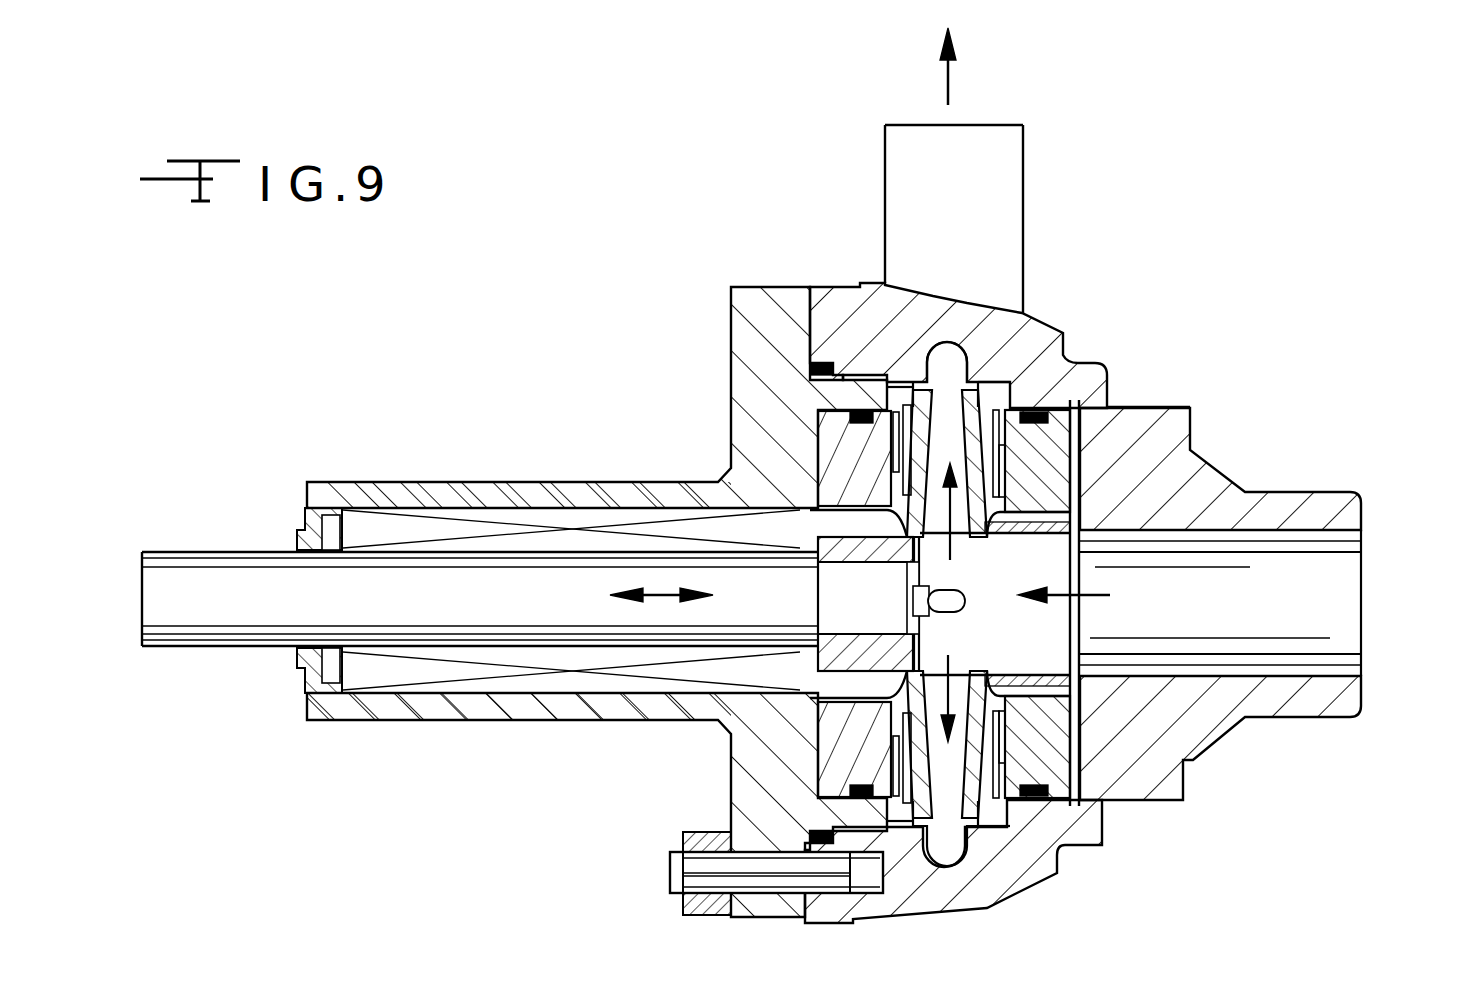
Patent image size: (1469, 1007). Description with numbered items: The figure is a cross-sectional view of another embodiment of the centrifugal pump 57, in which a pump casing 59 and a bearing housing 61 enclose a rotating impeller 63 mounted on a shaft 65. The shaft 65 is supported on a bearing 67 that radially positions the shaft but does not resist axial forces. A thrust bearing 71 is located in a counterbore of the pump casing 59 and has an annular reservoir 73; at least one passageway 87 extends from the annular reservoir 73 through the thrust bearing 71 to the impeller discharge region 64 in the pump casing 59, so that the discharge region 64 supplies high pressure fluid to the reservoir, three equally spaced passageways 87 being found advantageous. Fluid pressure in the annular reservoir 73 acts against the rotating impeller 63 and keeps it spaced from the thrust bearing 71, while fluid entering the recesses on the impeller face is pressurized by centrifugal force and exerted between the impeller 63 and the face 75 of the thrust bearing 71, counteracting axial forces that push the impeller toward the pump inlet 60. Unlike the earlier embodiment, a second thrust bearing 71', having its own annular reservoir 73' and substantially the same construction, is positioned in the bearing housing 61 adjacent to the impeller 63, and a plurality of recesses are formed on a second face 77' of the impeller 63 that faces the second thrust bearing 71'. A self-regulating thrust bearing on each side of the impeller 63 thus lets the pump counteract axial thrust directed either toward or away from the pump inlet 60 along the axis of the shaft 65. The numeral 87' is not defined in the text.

The centrifugal pump 57 is at (1228, 418).
The pump casing 59 is at (1230, 468).
The pump inlet 60 is at (1362, 598).
The bearing housing 61 is at (731, 340).
The rotating impeller 63 is at (948, 390).
The impeller discharge region 64 is at (975, 345).
The shaft 65 is at (181, 552).
The bearing 67 is at (440, 482).
The thrust bearing 71 is at (1116, 420).
The second thrust bearing 71' is at (771, 430).
The annular reservoir 73 is at (1144, 747).
The annular reservoir 73' is at (768, 756).
The face of the thrust bearing 75 is at (1101, 812).
The second face of the impeller 77' is at (881, 502).
The passageway 87 is at (1223, 330).
The thrust washer 87' is at (801, 604).